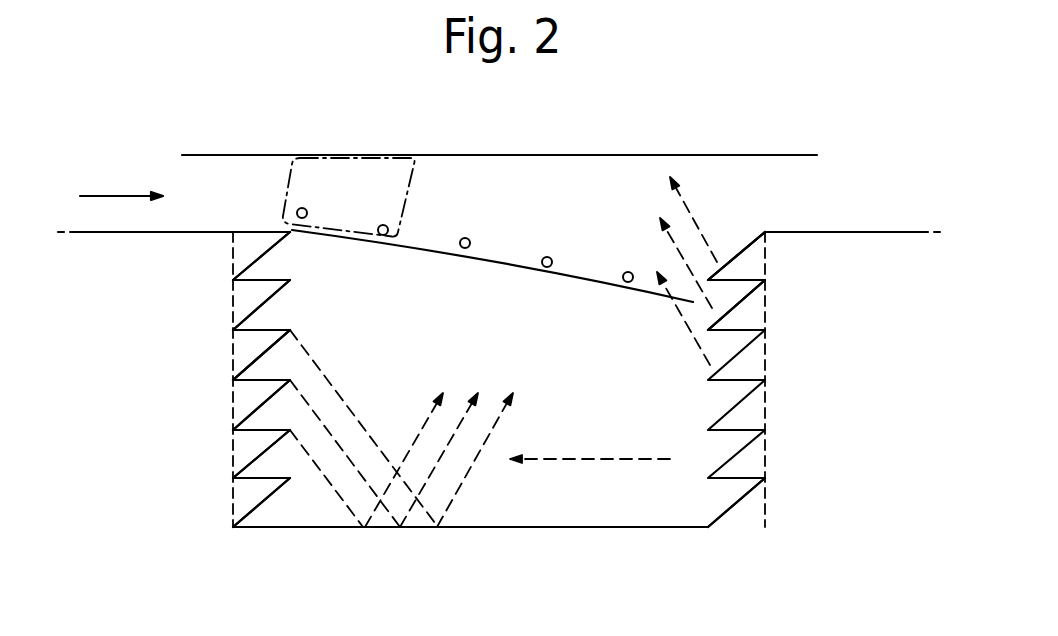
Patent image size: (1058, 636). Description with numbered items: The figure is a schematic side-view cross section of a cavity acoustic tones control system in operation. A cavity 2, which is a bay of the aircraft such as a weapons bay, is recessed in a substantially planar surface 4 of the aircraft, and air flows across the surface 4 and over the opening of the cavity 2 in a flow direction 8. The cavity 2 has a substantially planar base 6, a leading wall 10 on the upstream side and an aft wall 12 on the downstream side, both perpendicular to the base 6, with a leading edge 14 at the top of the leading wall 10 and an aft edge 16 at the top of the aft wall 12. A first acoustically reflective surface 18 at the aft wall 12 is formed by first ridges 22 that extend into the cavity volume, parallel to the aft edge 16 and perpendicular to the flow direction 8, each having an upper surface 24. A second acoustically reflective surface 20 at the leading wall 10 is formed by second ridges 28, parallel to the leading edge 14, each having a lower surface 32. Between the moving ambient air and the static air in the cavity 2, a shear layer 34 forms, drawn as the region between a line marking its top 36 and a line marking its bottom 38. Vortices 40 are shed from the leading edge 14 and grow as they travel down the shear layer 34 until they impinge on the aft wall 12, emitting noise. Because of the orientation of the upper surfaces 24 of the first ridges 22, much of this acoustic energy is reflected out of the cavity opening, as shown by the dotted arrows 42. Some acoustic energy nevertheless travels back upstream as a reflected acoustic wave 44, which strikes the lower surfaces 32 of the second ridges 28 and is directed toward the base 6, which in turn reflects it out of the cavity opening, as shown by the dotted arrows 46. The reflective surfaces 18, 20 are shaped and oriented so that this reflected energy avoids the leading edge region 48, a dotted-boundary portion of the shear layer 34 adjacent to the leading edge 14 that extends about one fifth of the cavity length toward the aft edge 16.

The cavity 2 is at (499, 381).
The surface 4 is at (93, 233).
The planar base 6 is at (422, 527).
The flow direction 8 is at (103, 195).
The leading wall 10 is at (232, 293).
The aft wall 12 is at (765, 357).
The leading edge 14 is at (290, 228).
The aft edge 16 is at (766, 225).
The first acoustically reflective surface 18 is at (694, 492).
The second acoustically reflective surface 20 is at (284, 507).
The first ridges 22 is at (748, 313).
The upper surfaces of the first ridges 24 is at (745, 251).
The second ridges 28 is at (238, 347).
The lower surfaces of the second ridges 32 is at (257, 412).
The shear layer 34 is at (515, 203).
The top of the shear layer 36 is at (577, 153).
The bottom of the shear layer 38 is at (575, 277).
The vortices 40 is at (302, 208).
The reflected acoustic energy 42 is at (697, 211).
The reflected acoustic wave 44 is at (590, 460).
The reflected acoustic energy 46 is at (298, 393).
The leading edge region 48 is at (416, 176).